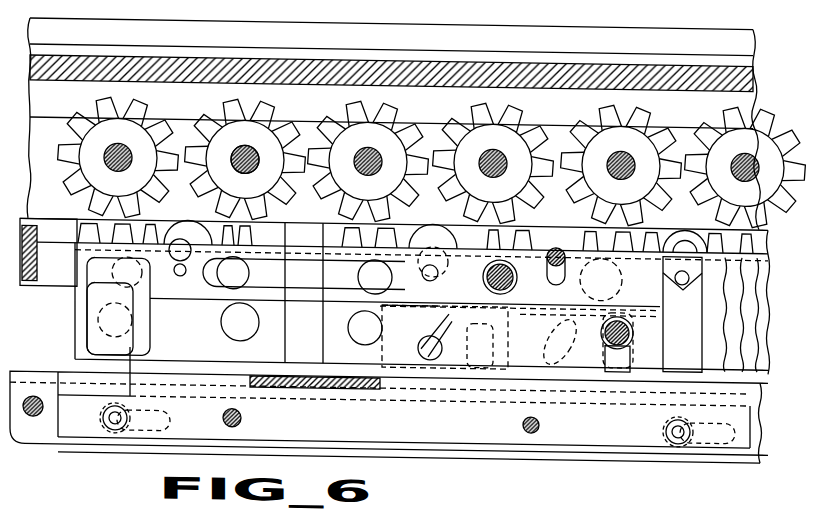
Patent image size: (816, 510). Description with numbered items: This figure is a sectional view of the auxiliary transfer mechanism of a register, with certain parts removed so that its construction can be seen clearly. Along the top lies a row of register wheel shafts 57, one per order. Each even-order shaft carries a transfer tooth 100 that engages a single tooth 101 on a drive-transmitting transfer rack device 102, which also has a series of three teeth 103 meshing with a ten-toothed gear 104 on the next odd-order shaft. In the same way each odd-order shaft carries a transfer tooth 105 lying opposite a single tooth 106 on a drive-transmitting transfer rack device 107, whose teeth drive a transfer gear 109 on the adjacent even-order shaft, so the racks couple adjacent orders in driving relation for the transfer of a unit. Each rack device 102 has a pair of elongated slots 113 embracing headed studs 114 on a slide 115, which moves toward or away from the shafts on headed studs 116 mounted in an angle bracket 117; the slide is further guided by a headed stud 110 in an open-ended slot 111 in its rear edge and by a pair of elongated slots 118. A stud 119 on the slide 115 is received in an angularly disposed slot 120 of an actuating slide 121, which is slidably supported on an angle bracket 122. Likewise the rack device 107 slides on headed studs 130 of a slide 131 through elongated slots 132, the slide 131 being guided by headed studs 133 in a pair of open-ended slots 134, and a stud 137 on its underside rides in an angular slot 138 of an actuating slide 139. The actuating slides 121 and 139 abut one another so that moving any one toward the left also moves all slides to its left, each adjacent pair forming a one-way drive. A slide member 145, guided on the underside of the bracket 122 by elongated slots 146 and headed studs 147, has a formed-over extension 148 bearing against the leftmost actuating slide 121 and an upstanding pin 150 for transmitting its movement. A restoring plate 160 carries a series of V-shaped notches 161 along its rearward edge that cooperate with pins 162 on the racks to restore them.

The register wheel shaft 57 is at (258, 144).
The transfer tooth 100 is at (507, 212).
The single tooth 101 is at (236, 228).
The drive-transmitting transfer rack device 102 is at (331, 245).
The series of three teeth 103 is at (72, 204).
The ten-toothed gear 104 is at (637, 111).
The transfer tooth 105 is at (638, 210).
The single tooth 106 is at (652, 198).
The drive-transmitting transfer rack device 107 is at (603, 247).
The transfer gear 109 is at (517, 105).
The headed stud 110 is at (430, 231).
The open-ended slot 111 is at (456, 282).
The elongated slot 113 is at (335, 282).
The headed stud 114 is at (286, 248).
The slide 115 is at (333, 328).
The headed stud 116 is at (348, 315).
The angle bracket 117 is at (293, 348).
The elongated slot 118 is at (242, 374).
The stud 119 is at (470, 346).
The angularly disposed slot 120 is at (425, 345).
The actuating slide 121 is at (415, 376).
The angle bracket 122 is at (541, 440).
The headed stud 130 is at (582, 244).
The slide 131 is at (585, 363).
The elongated slot 132 is at (583, 288).
The headed stud 133 is at (630, 322).
The open-ended slot 134 is at (608, 355).
The stud 137 is at (552, 338).
The angular slot 138 is at (594, 354).
The actuating slide 139 is at (524, 379).
The slide member 145 is at (32, 432).
The elongated slot 146 is at (729, 438).
The headed stud 147 is at (669, 442).
The formed-over extension 148 is at (72, 376).
The upstanding pin 150 is at (45, 404).
The restoring plate 160 is at (422, 337).
The V-shaped notch 161 is at (438, 276).
The pin 162 is at (434, 258).